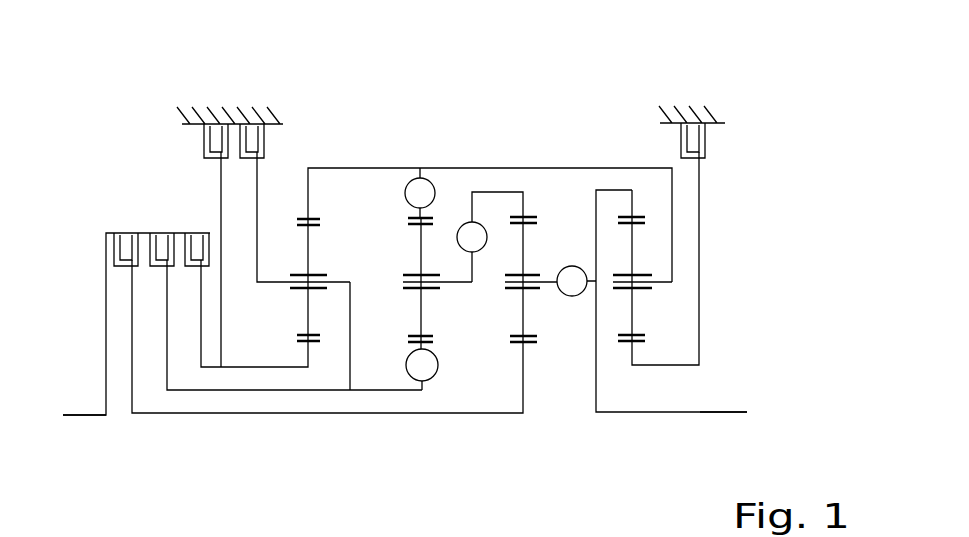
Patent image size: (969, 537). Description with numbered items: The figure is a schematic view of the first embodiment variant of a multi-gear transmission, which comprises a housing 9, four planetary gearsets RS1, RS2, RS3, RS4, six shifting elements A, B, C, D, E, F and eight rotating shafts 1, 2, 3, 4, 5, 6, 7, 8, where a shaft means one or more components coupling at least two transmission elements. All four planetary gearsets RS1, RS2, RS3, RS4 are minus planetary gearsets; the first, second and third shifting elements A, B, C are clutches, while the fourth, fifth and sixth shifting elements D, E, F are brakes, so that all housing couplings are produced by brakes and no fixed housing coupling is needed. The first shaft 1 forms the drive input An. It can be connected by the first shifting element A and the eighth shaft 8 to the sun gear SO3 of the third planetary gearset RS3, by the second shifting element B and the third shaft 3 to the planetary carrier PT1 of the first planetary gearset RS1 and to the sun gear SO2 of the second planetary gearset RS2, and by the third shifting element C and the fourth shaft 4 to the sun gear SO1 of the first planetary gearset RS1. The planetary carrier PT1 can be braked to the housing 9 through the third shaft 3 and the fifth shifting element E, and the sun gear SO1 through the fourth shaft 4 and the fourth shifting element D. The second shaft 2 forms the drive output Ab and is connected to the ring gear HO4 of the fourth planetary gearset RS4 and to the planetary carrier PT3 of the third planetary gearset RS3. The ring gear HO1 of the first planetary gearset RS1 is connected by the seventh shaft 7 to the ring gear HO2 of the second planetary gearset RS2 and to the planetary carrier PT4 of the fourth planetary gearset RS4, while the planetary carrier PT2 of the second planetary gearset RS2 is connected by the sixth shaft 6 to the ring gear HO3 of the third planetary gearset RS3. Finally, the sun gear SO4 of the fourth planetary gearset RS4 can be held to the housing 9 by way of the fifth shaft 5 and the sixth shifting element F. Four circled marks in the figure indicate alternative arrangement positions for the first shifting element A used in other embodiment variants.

The first shaft 1 is at (93, 418).
The second shaft 2 is at (685, 413).
The third shaft 3 is at (377, 393).
The fourth shaft 4 is at (240, 368).
The fifth shaft 5 is at (700, 245).
The sixth shaft 6 is at (467, 282).
The seventh shaft 7 is at (480, 167).
The eighth shaft 8 is at (162, 415).
The housing 9 is at (253, 122).
The first planetary gearset RS1 is at (311, 131).
The second planetary gearset RS2 is at (424, 129).
The third planetary gearset RS3 is at (526, 129).
The fourth planetary gearset RS4 is at (633, 129).
The ring gear of the first planetary gearset HO1 is at (315, 218).
The ring gear of the second planetary gearset HO2 is at (405, 212).
The ring gear of the third planetary gearset HO3 is at (532, 216).
The ring gear of the fourth planetary gearset HO4 is at (638, 218).
The planetary carrier of the first planetary gearset PT1 is at (340, 279).
The planetary carrier of the second planetary gearset PT2 is at (447, 275).
The planetary carrier of the third planetary gearset PT3 is at (553, 270).
The planetary carrier of the fourth planetary gearset PT4 is at (663, 281).
The sun gear of the first planetary gearset SO1 is at (300, 343).
The sun gear of the second planetary gearset SO2 is at (435, 343).
The sun gear of the third planetary gearset SO3 is at (530, 343).
The sun gear of the fourth planetary gearset SO4 is at (643, 342).
The first shifting element A is at (126, 237).
The second shifting element B is at (162, 237).
The third shifting element C is at (197, 237).
The fourth shifting element D is at (208, 141).
The fifth shifting element E is at (260, 141).
The sixth shifting element F is at (701, 141).
The drive input An is at (84, 404).
The drive output Ab is at (723, 402).